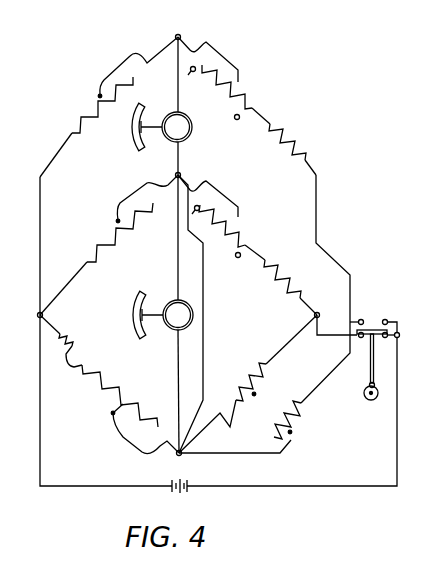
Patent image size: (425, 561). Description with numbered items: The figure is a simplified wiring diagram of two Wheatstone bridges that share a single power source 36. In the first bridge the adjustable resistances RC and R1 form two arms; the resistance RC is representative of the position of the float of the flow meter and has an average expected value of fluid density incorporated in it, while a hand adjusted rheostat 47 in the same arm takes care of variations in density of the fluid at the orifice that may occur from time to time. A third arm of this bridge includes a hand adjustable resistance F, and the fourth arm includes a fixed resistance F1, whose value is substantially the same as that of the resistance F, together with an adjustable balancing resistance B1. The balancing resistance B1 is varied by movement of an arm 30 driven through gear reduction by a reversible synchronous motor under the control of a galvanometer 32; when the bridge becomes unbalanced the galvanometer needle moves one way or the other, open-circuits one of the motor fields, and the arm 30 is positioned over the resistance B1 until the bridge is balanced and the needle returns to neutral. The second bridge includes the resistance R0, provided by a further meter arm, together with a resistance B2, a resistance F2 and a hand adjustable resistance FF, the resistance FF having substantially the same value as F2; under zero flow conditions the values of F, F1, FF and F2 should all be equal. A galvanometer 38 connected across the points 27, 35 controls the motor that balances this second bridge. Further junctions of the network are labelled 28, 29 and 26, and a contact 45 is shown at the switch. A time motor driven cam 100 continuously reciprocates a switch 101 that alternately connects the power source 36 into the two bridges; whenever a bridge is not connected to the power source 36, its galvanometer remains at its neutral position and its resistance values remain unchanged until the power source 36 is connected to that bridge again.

The point 35 is at (179, 28).
The resistance R0 is at (109, 107).
The resistor B2 is at (215, 78).
The resistance F2 is at (284, 141).
The galvanometer 38 is at (192, 127).
The junction node 29 is at (172, 169).
The arm 30 is at (212, 184).
The balancing resistance B1 is at (217, 216).
The resistance R1 is at (109, 245).
The fixed resistance F1 is at (281, 280).
The junction node 28 is at (27, 317).
The hand adjusted rheostat 47 is at (67, 341).
The resistance RC is at (130, 409).
The galvanometer 32 is at (170, 328).
The hand adjustable resistance F is at (272, 358).
The hand adjustable resistance FF is at (282, 416).
The junction node 26 is at (329, 317).
The point 27 is at (193, 462).
The power source 36 is at (192, 492).
The switch contacts 45 is at (385, 324).
The switch 101 is at (391, 341).
The time motor driven cam 100 is at (370, 378).